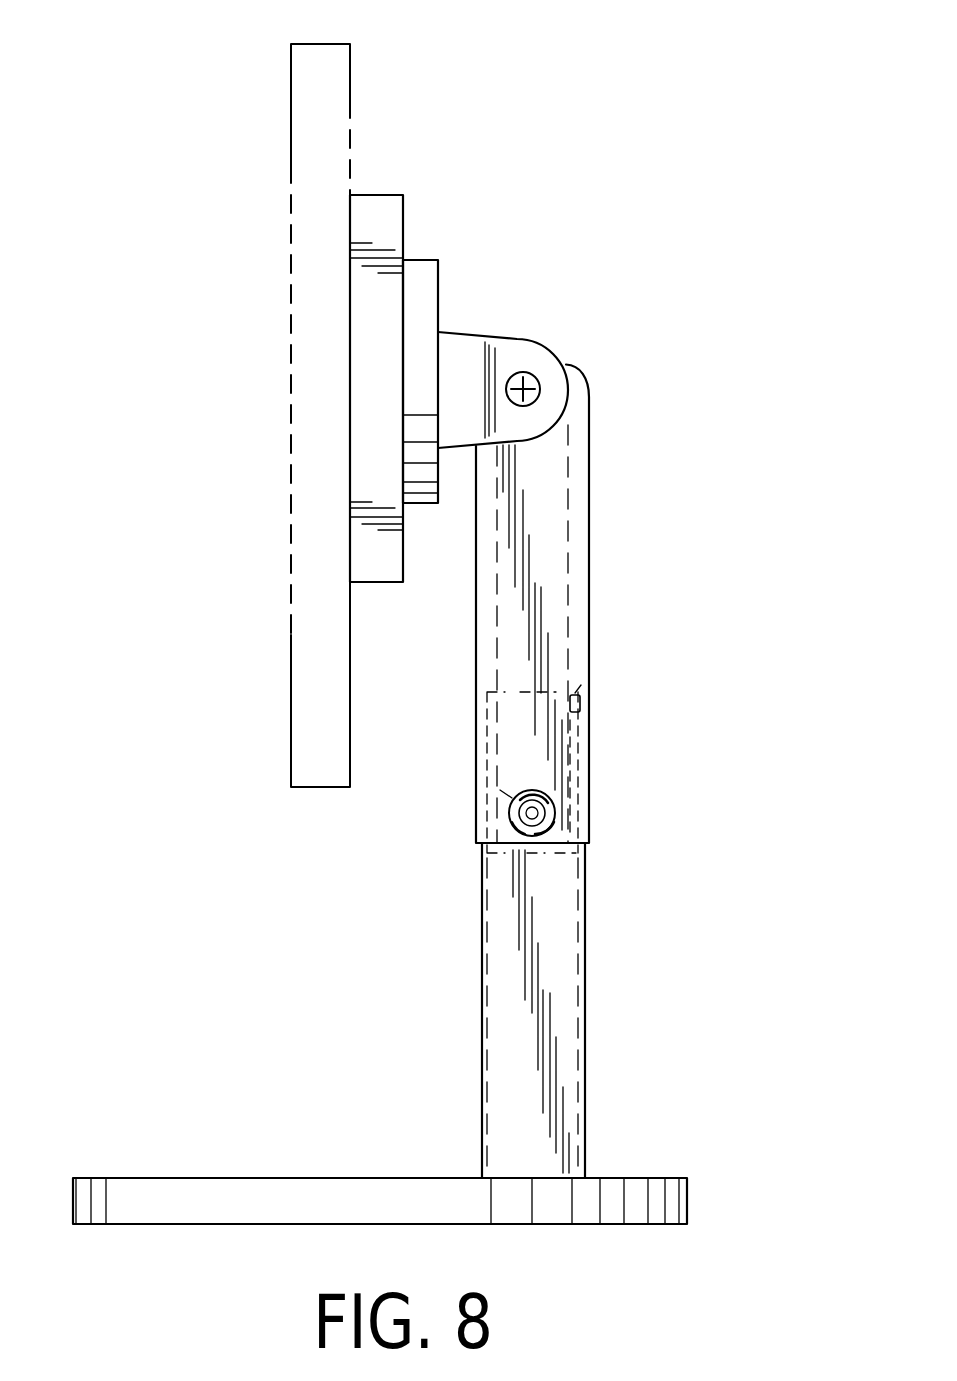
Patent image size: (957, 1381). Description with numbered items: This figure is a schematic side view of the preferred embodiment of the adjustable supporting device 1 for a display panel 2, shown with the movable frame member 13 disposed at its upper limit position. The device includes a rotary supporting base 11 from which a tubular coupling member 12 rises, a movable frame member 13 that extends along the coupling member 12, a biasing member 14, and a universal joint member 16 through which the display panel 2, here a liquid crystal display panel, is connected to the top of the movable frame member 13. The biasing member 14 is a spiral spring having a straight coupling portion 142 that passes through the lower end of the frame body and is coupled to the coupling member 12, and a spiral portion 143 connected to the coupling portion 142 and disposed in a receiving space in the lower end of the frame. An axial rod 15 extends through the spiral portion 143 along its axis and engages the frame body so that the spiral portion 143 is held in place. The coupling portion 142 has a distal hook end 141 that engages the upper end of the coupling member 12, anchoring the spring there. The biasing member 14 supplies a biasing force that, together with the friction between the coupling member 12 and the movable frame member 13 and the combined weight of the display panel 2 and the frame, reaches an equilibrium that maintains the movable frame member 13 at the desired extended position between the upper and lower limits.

The adjustable supporting device 1 is at (675, 353).
The display panel 2 is at (318, 83).
The rotary supporting base 11 is at (325, 1178).
The tubular coupling member 12 is at (583, 884).
The movable frame member 13 is at (568, 483).
The biasing member 14 is at (566, 728).
The distal hook end 141 is at (588, 690).
The coupling portion 142 is at (576, 732).
The spiral portion 143 is at (497, 782).
The axial rod 15 is at (497, 794).
The universal joint member 16 is at (458, 332).